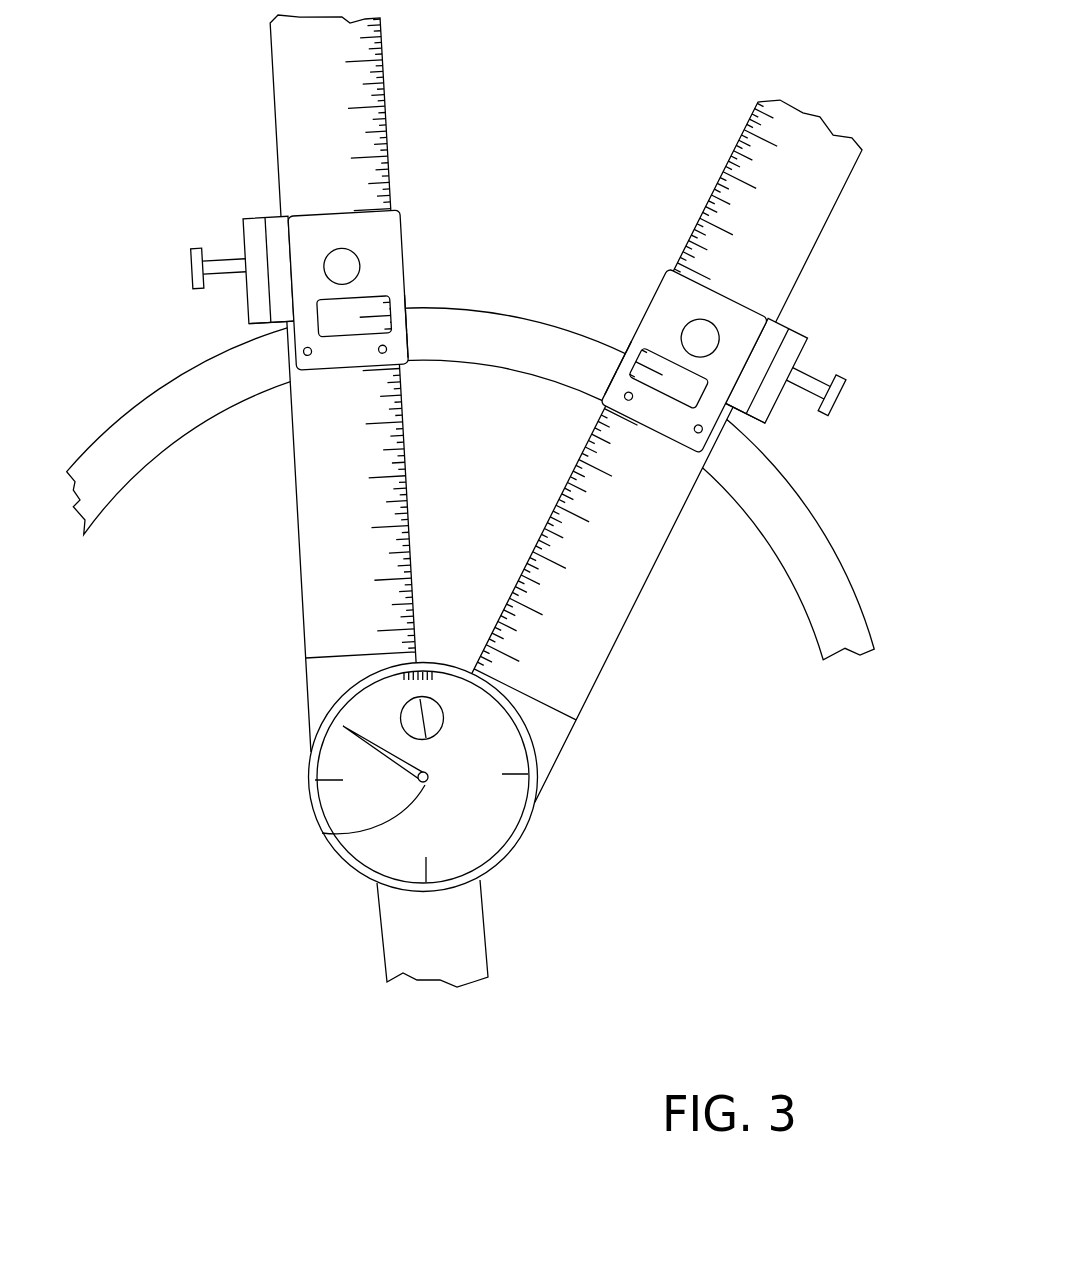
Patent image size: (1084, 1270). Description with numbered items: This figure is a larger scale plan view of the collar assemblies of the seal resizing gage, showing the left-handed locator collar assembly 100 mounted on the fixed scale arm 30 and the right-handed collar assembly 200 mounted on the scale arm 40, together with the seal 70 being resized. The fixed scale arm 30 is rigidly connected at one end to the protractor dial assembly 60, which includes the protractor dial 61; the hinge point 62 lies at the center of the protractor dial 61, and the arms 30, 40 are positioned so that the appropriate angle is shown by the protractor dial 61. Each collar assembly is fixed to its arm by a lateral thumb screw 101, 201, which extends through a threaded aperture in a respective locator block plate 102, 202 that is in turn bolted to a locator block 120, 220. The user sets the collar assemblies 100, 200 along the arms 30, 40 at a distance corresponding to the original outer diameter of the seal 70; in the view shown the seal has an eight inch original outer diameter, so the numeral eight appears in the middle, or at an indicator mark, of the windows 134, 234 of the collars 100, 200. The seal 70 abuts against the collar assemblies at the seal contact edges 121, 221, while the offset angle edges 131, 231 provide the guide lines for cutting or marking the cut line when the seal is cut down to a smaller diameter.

The fixed scale arm 30 is at (290, 87).
The scale arm 40 is at (792, 153).
The protractor dial assembly 60 is at (439, 825).
The protractor dial 61 is at (510, 800).
The hinge point 62 is at (322, 833).
The seal 70 is at (155, 415).
The left-handed locator collar assembly 100 is at (317, 274).
The thumb screw 101 is at (222, 257).
The locator block plate 102 is at (259, 302).
The locator block 120 is at (272, 230).
The seal contact edge 121 is at (397, 314).
The offset angle edge 131 is at (408, 341).
The window 134 is at (377, 297).
The right-handed collar assembly 200 is at (717, 325).
The thumb screw 201 is at (810, 369).
The locator block plate 202 is at (762, 424).
The locator block 220 is at (781, 318).
The seal contact edge 221 is at (624, 357).
The offset angle edge 231 is at (613, 375).
The window 234 is at (658, 348).